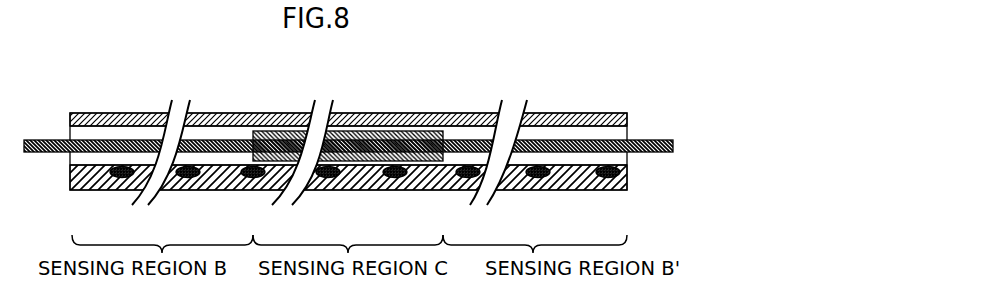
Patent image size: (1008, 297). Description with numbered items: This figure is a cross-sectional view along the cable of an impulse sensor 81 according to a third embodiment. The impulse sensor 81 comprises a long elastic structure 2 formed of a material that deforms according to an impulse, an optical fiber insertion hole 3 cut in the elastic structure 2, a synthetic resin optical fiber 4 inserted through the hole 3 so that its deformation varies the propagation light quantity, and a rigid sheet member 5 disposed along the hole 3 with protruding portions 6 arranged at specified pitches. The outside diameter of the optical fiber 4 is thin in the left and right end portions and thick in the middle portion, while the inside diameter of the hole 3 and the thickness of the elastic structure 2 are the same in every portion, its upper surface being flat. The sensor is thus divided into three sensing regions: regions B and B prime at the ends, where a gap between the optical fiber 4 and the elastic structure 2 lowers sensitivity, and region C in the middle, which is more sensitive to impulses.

The elastic structure 2 is at (617, 113).
The optical fiber insertion hole 3 is at (580, 130).
The synthetic resin optical fiber 4 is at (556, 150).
The sheet member 5 is at (597, 190).
The protruding portion 6 is at (543, 160).
The impulse sensor 81 is at (663, 108).